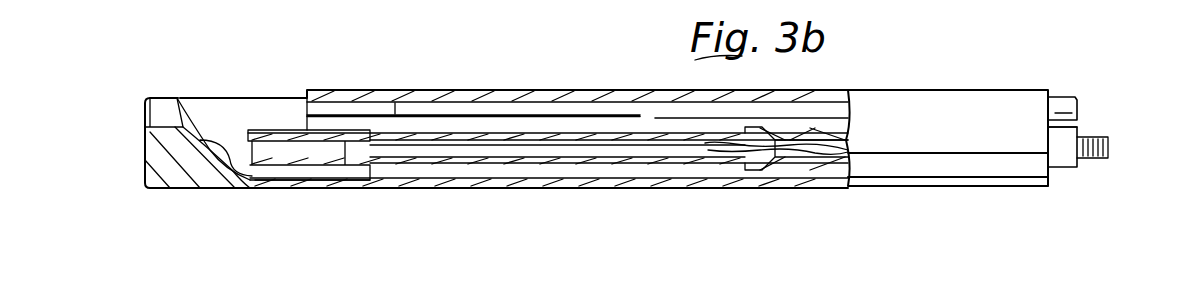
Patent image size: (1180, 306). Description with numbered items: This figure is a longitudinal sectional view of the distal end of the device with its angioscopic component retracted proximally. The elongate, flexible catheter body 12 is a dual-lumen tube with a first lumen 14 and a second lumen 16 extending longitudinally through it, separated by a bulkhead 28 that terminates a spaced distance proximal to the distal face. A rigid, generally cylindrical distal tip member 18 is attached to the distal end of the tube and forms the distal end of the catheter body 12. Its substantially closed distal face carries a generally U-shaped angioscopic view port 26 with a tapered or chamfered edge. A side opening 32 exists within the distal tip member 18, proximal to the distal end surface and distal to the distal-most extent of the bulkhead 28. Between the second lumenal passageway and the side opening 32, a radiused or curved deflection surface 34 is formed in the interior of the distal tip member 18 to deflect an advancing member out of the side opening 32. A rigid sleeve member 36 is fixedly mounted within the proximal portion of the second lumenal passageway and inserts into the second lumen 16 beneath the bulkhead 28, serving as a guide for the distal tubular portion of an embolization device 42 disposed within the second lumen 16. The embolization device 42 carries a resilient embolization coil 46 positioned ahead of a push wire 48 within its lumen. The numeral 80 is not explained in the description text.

The catheter body 12 is at (900, 115).
The first lumen 14 is at (1069, 90).
The second lumen 16 is at (1067, 186).
The distal tip member 18 is at (163, 204).
The angioscopic view port 26 is at (145, 118).
The bulkhead 28 is at (440, 113).
The side opening 32 is at (307, 92).
The deflection surface 34 is at (226, 170).
The rigid sleeve member 36 is at (320, 178).
The embolization device 42 is at (1072, 167).
The embolization coil 46 is at (800, 148).
The push wire 48 is at (1105, 138).
The seal gap 80 is at (398, 108).